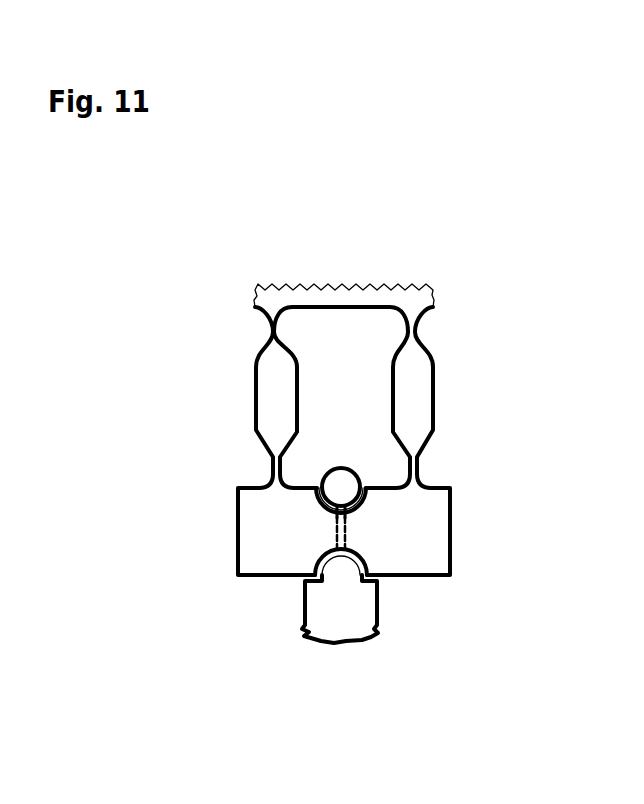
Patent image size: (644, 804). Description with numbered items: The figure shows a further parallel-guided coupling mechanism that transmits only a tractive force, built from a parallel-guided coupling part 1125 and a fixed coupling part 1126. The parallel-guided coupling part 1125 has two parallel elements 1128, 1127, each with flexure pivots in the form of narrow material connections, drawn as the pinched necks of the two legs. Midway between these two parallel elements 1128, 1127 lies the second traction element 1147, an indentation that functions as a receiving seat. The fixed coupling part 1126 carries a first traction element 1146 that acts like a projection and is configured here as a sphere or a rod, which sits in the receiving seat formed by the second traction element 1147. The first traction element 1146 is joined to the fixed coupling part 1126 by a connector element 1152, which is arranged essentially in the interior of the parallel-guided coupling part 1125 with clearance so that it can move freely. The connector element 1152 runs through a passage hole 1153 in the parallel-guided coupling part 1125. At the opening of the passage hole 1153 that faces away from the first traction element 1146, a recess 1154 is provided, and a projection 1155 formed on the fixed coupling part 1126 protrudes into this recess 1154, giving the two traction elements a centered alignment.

The parallel-guided coupling part 1125 is at (491, 467).
The fixed coupling part 1126 is at (417, 627).
The parallel element 1127 is at (413, 388).
The parallel element 1128 is at (270, 383).
The first traction element 1146 is at (355, 505).
The second traction element 1147 is at (347, 482).
The connector element 1152 is at (337, 522).
The passage hole 1153 is at (345, 532).
The recess 1154 is at (322, 556).
The projection 1155 is at (338, 567).